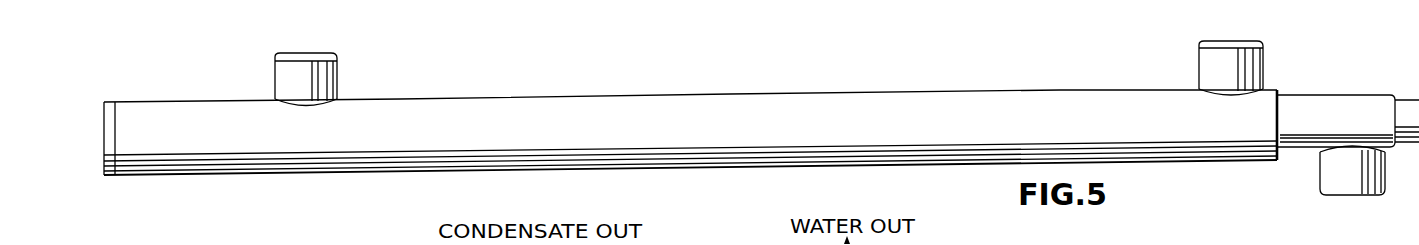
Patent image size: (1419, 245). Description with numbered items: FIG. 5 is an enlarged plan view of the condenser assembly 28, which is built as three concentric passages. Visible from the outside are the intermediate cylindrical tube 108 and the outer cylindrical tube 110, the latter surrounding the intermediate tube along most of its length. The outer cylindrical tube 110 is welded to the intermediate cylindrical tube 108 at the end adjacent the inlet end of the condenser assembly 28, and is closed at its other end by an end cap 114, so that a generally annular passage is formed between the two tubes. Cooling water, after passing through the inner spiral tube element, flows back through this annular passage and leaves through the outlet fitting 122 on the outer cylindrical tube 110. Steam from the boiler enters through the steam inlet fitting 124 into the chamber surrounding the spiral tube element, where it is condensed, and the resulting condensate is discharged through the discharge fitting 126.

The condenser assembly 28 is at (690, 116).
The intermediate cylindrical tube 108 is at (1357, 98).
The outer cylindrical tube 110 is at (1242, 160).
The end cap 114 is at (108, 175).
The outlet fitting 122 is at (1263, 65).
The steam inlet fitting 124 is at (1323, 173).
The discharge fitting 126 is at (333, 67).